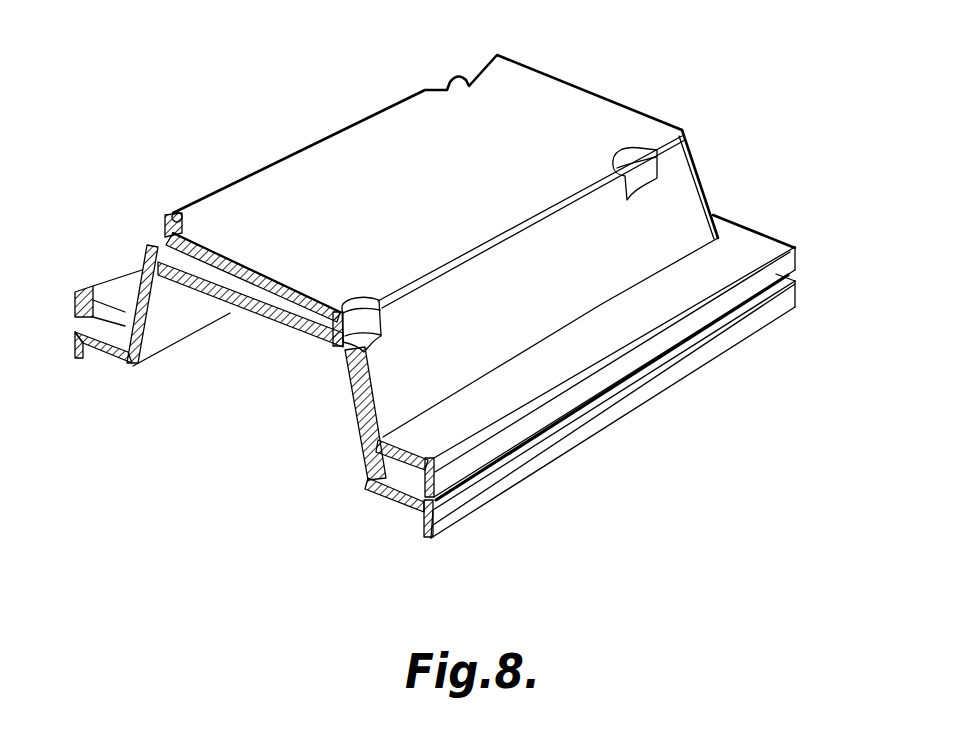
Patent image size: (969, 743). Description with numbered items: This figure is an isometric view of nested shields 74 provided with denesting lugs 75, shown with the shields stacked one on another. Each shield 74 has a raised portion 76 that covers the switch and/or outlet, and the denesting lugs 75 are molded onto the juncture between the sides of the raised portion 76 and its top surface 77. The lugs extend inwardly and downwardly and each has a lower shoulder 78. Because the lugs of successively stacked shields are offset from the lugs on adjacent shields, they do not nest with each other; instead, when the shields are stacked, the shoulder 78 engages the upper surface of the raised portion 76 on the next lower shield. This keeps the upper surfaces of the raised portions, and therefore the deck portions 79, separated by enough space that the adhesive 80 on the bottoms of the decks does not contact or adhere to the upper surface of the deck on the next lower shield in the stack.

The shield 74 is at (787, 232).
The denesting lugs 75 is at (637, 165).
The raised portion 76 is at (668, 196).
The top surface 77 is at (526, 103).
The lower shoulder 78 is at (340, 354).
The deck portions 79 is at (443, 428).
The adhesive 80 is at (370, 476).